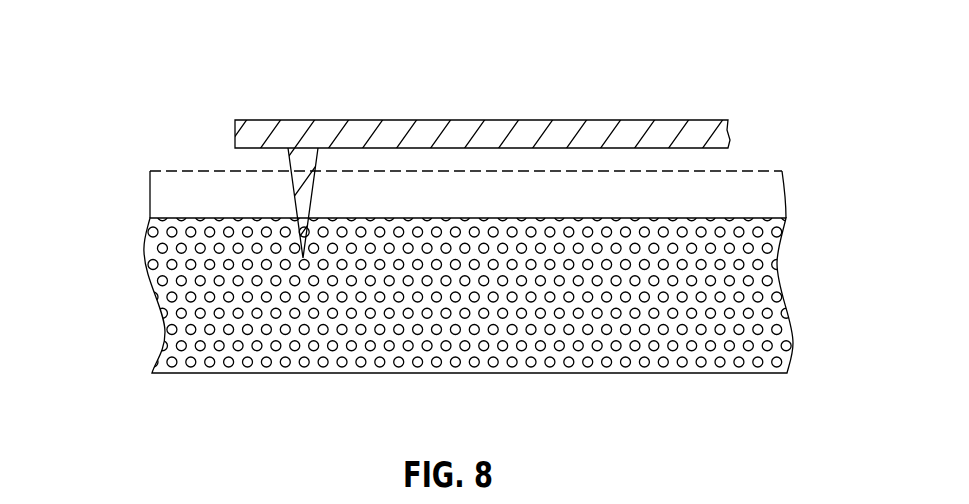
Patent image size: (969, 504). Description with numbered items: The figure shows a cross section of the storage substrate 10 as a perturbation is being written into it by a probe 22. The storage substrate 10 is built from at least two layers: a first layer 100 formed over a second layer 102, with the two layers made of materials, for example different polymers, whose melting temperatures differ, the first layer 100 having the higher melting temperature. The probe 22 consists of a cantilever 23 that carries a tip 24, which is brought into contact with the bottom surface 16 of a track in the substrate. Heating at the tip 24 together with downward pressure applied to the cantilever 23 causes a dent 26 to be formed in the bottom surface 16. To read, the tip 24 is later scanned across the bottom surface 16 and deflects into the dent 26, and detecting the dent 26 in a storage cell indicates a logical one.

The storage substrate 10 is at (107, 167).
The bottom surface 16 is at (405, 216).
The probe 22 is at (660, 100).
The cantilever 23 is at (532, 120).
The tip 24 is at (296, 182).
The dent 26 is at (292, 240).
The first layer 100 is at (787, 187).
The second layer 102 is at (775, 318).